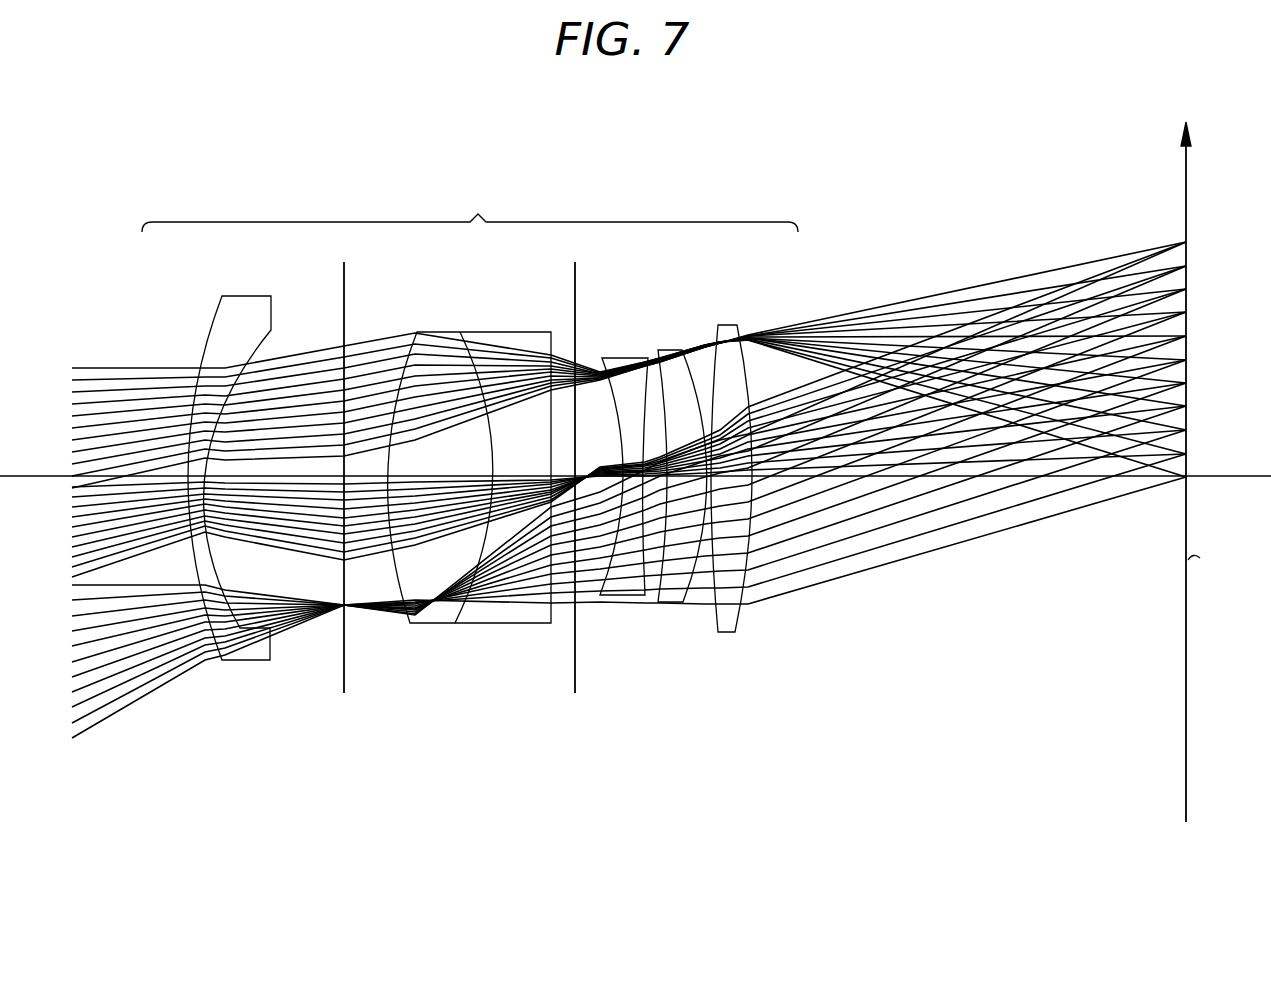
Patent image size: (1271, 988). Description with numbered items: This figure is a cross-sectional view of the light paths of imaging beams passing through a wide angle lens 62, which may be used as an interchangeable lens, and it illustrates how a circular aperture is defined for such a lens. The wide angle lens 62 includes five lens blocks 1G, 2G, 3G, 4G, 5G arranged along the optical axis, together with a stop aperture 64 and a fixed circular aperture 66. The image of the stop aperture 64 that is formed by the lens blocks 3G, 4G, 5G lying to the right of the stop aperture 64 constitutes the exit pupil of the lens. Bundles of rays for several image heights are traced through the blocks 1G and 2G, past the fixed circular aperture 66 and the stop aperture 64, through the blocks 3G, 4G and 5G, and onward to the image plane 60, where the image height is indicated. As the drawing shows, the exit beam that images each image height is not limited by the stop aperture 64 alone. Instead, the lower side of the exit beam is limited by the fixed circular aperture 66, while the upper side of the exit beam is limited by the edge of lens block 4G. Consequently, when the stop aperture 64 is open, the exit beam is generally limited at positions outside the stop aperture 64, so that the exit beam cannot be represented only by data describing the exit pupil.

The wide angle lens 62 is at (470, 147).
The fixed circular aperture 66 is at (344, 686).
The stop aperture 64 is at (575, 686).
The image plane 60 is at (1224, 212).
The lens block 1G is at (245, 660).
The lens block 2G is at (560, 632).
The lens block 3G is at (618, 596).
The lens block 4G is at (670, 602).
The lens block 5G is at (726, 625).